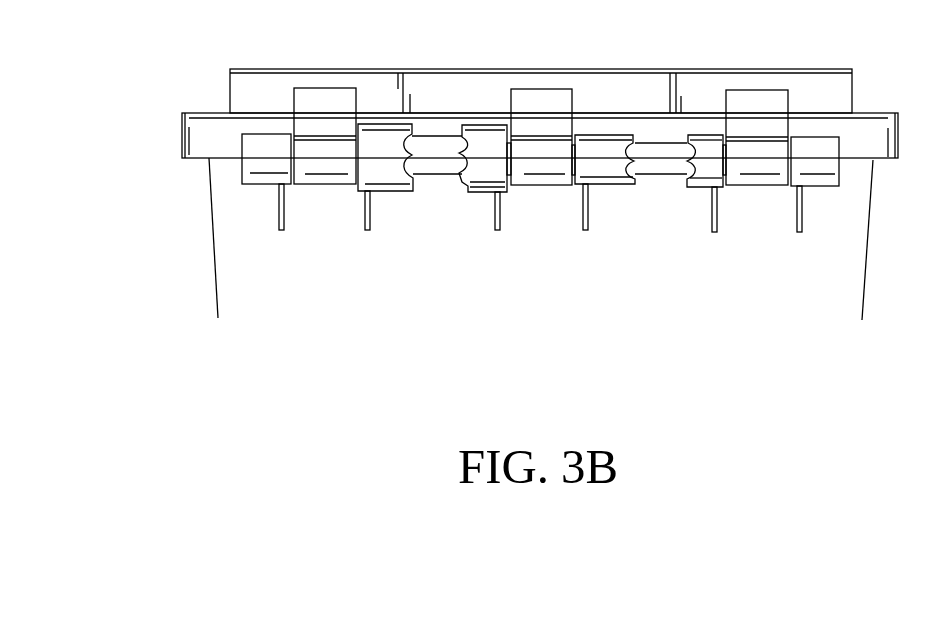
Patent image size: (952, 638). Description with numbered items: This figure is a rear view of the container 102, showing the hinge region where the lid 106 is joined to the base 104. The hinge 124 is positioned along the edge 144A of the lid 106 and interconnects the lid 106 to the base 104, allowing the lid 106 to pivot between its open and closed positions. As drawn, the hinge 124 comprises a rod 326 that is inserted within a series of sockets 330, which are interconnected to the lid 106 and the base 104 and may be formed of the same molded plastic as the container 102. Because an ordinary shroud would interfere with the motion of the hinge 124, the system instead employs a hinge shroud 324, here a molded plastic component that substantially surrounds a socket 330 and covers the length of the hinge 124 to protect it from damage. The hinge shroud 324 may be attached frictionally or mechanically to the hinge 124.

The container 102 is at (213, 272).
The base 104 is at (840, 277).
The lid 106 is at (775, 72).
The hinge 124 is at (507, 162).
The edge 144A is at (262, 112).
The hinge shroud 324 is at (486, 134).
The rod 326 is at (659, 167).
The socket 330 is at (430, 167).